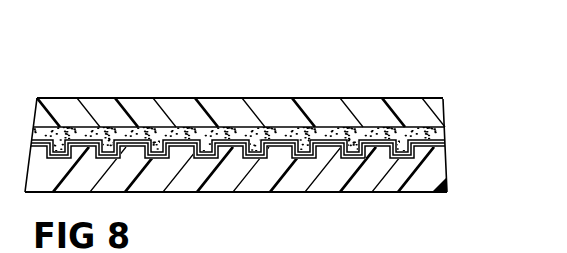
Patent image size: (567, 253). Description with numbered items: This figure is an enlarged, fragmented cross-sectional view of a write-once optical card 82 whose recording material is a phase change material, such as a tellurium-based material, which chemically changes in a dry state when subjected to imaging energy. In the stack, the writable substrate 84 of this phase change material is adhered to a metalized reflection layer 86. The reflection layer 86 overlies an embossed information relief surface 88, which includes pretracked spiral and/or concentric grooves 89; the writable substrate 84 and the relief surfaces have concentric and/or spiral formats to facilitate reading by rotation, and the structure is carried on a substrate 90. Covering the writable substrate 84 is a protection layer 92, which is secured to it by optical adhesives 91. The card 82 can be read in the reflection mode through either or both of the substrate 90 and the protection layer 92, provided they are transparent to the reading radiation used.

The write-once optical card 82 is at (548, 33).
The writable substrate 84 is at (441, 139).
The metalized reflection layer 86 is at (441, 146).
The embossed information relief surface 88 is at (440, 134).
The pretracked grooves 89 is at (318, 153).
The substrate 90 is at (427, 193).
The optical adhesives 91 is at (439, 130).
The protection layer 92 is at (393, 99).